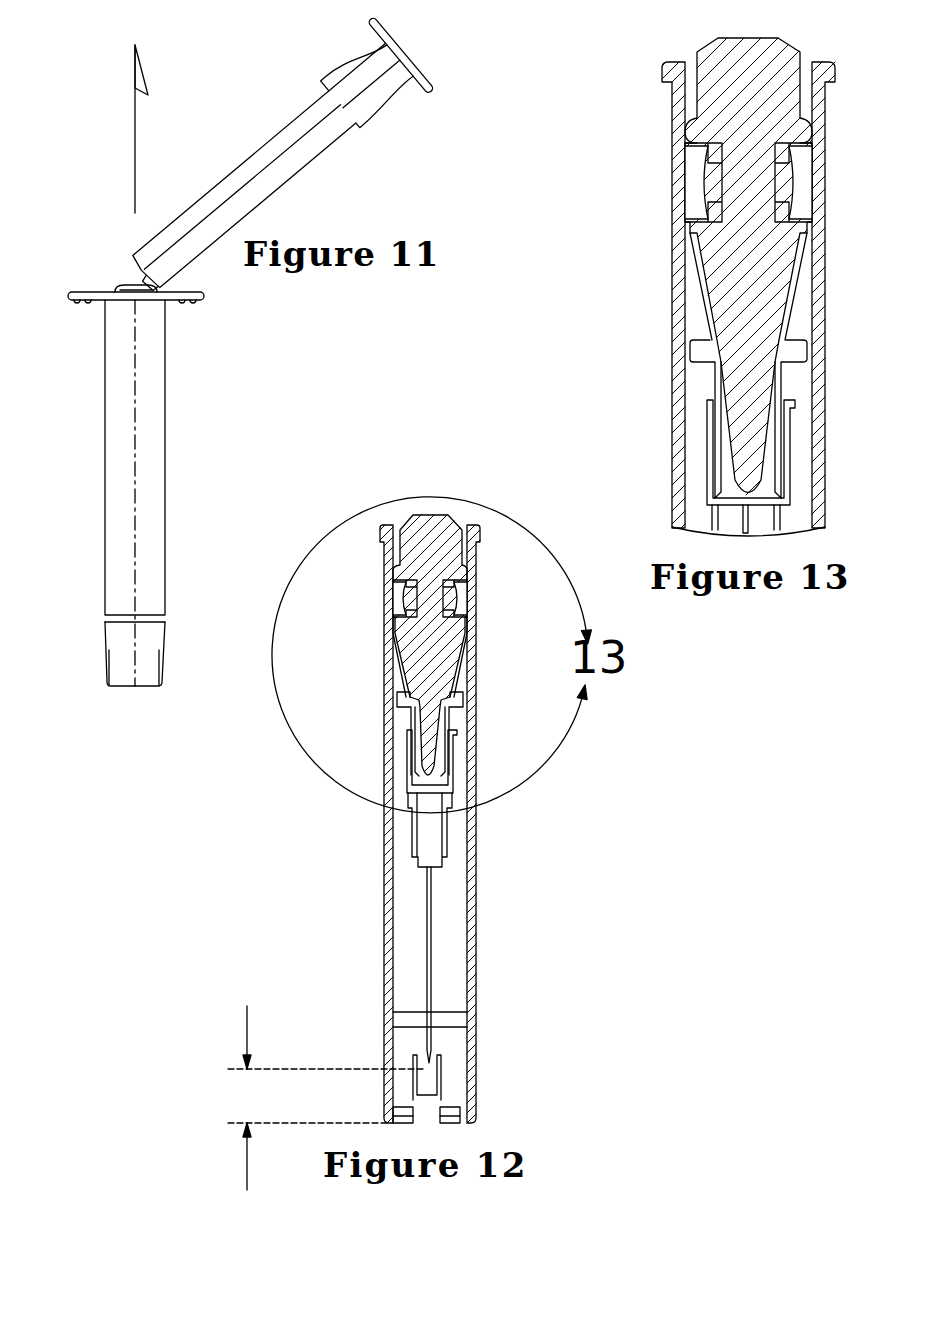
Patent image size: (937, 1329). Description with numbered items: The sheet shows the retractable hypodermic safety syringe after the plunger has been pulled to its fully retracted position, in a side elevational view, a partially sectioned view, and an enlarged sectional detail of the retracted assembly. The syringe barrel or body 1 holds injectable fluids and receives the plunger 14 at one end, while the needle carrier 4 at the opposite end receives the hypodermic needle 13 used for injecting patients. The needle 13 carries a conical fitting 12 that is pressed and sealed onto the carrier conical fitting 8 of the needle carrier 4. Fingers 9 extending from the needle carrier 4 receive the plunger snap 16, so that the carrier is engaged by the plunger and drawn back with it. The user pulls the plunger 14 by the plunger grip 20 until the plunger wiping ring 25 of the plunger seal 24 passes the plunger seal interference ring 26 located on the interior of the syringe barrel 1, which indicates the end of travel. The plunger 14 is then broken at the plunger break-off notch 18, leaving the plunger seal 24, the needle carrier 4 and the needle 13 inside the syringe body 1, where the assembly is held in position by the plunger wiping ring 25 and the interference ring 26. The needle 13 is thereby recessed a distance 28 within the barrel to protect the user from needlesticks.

In FIG. 11, the syringe barrel 1 is at (165, 482).
In FIG. 12, the needle carrier 4 is at (403, 667).
In FIG. 12, the carrier conical fitting 8 is at (412, 750).
In FIG. 12, the fingers 9 is at (412, 777).
In FIG. 11, the conical fitting 12 is at (135, 300).
In FIG. 12, the conical fitting 12 is at (403, 838).
In FIG. 12, the hypodermic needle 13 is at (432, 958).
In FIG. 11, the plunger 14 is at (250, 153).
In FIG. 12, the plunger 14 is at (428, 515).
In FIG. 12, the plunger snap 16 is at (433, 787).
In FIG. 11, the plunger break-off notch 18 is at (133, 272).
In FIG. 11, the plunger grip 20 is at (418, 70).
In FIG. 12, the plunger seal 24 is at (400, 585).
In FIG. 12, the plunger wiping ring 25 is at (463, 592).
In FIG. 13, the plunger wiping ring 25 is at (684, 158).
In FIG. 12, the plunger seal interference ring 26 is at (474, 594).
In FIG. 13, the plunger seal interference ring 26 is at (686, 174).
In FIG. 12, the distance 28 is at (247, 1006).